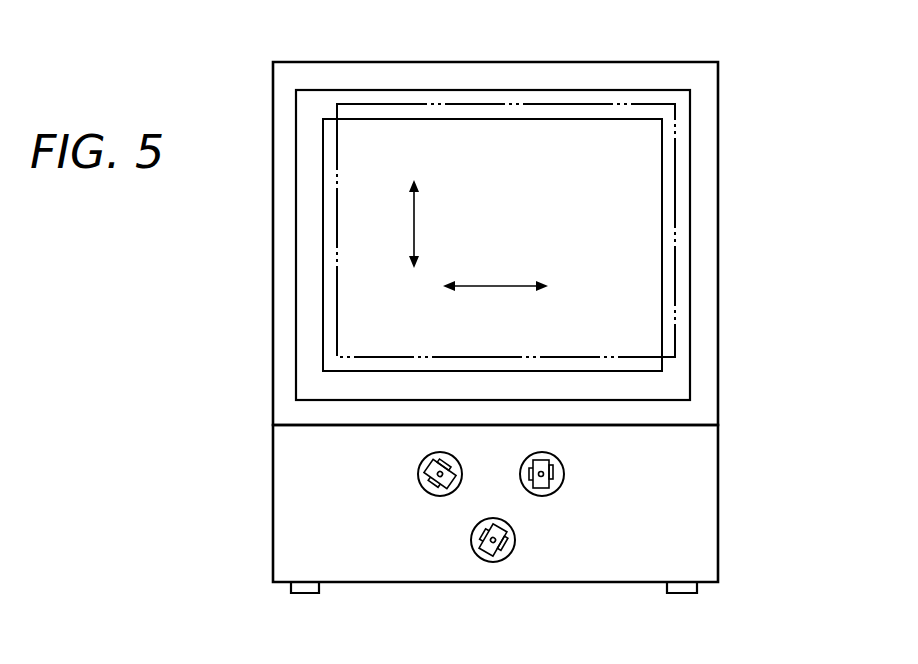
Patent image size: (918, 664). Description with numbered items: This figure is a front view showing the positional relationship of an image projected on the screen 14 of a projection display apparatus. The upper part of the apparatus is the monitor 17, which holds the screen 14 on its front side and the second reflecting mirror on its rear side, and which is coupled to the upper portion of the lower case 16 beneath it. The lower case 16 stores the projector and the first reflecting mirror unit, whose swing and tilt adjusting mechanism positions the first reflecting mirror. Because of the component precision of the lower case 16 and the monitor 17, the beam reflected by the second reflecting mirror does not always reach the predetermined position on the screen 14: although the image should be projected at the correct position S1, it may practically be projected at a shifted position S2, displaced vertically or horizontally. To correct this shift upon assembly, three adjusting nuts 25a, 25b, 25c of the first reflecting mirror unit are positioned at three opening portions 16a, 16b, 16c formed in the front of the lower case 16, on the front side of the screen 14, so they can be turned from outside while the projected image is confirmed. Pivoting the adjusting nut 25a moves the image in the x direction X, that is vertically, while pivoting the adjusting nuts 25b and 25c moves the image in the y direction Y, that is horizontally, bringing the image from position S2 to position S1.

The screen 14 is at (305, 382).
The lower case 16 is at (721, 534).
The opening portion 16a is at (494, 585).
The opening portion 16b is at (584, 542).
The opening portion 16c is at (399, 539).
The monitor 17 is at (721, 368).
The adjusting nut 25a is at (500, 562).
The adjusting nut 25b is at (542, 496).
The adjusting nut 25c is at (446, 496).
The correct position S1 is at (504, 117).
The shifted position S2 is at (573, 104).
The x direction X is at (410, 227).
The y direction Y is at (498, 283).